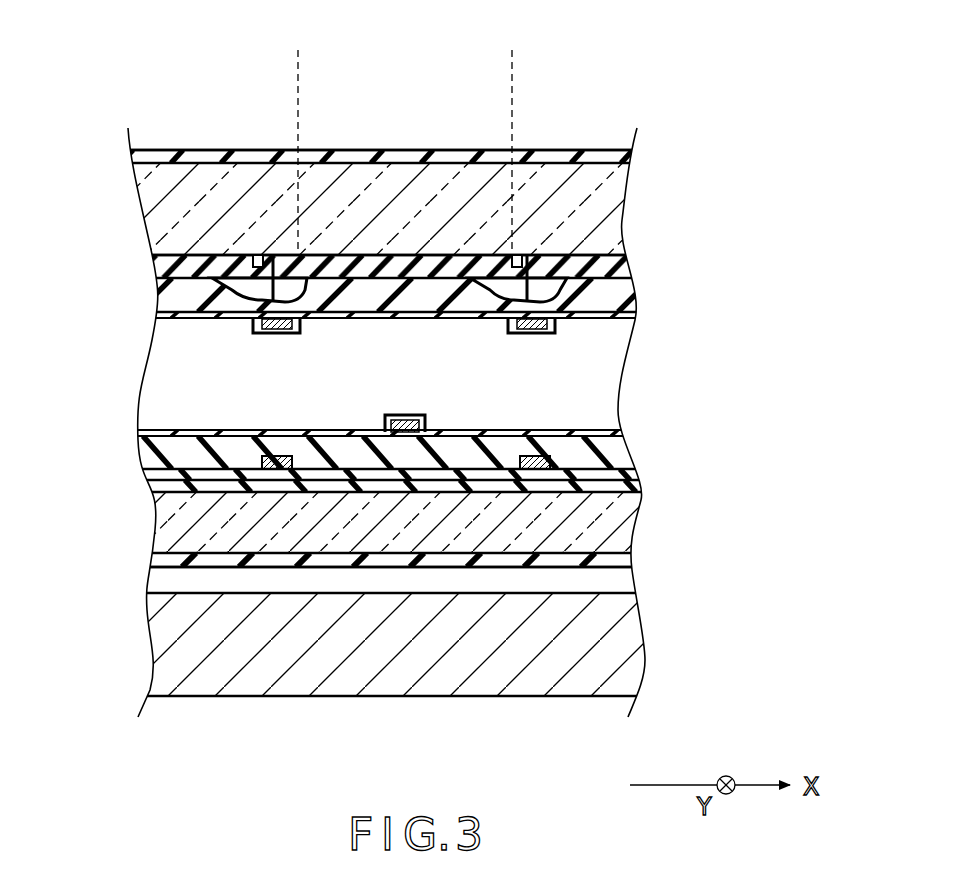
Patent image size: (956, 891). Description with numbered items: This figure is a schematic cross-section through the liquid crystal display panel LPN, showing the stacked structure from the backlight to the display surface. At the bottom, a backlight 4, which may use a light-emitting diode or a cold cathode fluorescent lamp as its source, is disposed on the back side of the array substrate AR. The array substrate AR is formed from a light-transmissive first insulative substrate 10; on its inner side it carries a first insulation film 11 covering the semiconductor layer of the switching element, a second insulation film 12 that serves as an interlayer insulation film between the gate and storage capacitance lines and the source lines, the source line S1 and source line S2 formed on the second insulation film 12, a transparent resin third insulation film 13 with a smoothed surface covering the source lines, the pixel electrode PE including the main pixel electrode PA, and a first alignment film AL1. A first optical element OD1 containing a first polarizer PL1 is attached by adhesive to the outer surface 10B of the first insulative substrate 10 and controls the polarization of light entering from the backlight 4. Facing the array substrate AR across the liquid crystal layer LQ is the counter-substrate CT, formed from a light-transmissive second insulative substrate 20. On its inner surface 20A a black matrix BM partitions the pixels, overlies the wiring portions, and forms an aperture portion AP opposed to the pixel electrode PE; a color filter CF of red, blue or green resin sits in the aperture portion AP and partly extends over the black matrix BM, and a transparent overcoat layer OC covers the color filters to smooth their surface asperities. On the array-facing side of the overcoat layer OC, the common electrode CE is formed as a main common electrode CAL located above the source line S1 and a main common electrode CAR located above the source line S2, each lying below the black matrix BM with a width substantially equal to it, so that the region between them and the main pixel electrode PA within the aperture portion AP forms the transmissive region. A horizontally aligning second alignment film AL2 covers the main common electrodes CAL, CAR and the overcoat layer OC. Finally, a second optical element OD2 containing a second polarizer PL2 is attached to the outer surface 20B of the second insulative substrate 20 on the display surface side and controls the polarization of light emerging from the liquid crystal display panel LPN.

The aperture portion AP is at (512, 50).
The outer surface of second insulative substrate 20B is at (176, 150).
The second optical element OD2 is at (360, 139).
The second polarizer PL2 is at (150, 157).
The color filter CF is at (218, 256).
The black matrix BM is at (272, 256).
The liquid crystal display panel LPN is at (654, 160).
The second insulative substrate 20 is at (369, 209).
The counter-substrate CT is at (131, 198).
The inner surface of second insulative substrate 20A is at (198, 260).
The overcoat layer OC is at (635, 296).
The second alignment film AL2 is at (630, 317).
The common electrode CE is at (350, 348).
The main common electrode CAL is at (272, 334).
The main common electrode CAR is at (533, 334).
The liquid crystal layer LQ is at (153, 407).
The main pixel electrode PA is at (421, 401).
The pixel electrode PE is at (402, 418).
The source line S1 is at (280, 456).
The source line S2 is at (535, 456).
The first alignment film AL1 is at (628, 432).
The third insulation film 13 is at (620, 455).
The second insulation film 12 is at (632, 474).
The first insulation film 11 is at (635, 486).
The first insulative substrate 10 is at (381, 522).
The array substrate AR is at (153, 521).
The first optical element OD1 is at (356, 553).
The first polarizer PL1 is at (150, 560).
The outer surface of first insulative substrate 10B is at (200, 567).
The backlight 4 is at (165, 660).